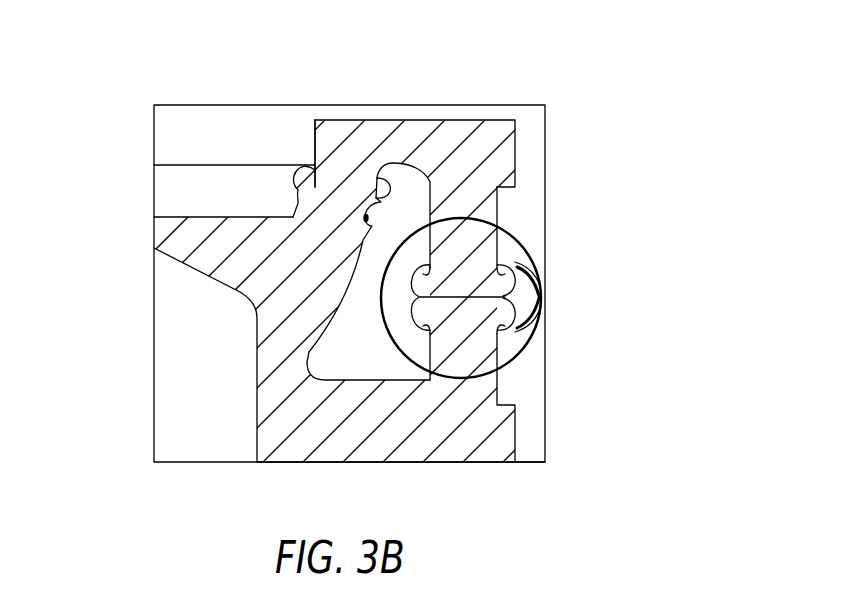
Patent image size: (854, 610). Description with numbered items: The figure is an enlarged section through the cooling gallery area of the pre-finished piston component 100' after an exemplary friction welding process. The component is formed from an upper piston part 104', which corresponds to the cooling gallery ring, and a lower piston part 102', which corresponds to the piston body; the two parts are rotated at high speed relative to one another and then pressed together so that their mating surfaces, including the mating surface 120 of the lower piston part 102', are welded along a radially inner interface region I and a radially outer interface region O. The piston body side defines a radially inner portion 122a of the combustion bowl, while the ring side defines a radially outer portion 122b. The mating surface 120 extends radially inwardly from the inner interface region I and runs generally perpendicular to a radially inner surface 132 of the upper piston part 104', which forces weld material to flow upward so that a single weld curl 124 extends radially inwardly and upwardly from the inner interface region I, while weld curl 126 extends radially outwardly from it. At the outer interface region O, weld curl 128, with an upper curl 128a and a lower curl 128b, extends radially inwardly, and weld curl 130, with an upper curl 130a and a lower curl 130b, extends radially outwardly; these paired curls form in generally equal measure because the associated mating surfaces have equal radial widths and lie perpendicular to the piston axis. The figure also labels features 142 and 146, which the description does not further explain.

The pre-finished piston component 100' is at (415, 238).
The lower piston part 102' is at (414, 107).
The upper piston part 104' is at (401, 482).
The mating surface 120 is at (243, 217).
The radially inner portion of the combustion bowl 122a is at (178, 215).
The radially outer portion of the combustion bowl 122b is at (313, 122).
The radially inner surface 132 is at (313, 122).
The weld curl 124 is at (297, 180).
The weld curl 126 is at (383, 193).
The weld curl 128 is at (382, 293).
The upper curl 128a is at (430, 222).
The lower curl 128b is at (431, 372).
The weld curl 130 is at (542, 291).
The upper curl 130a is at (513, 265).
The lower curl 130b is at (517, 323).
The groove wall 142 is at (498, 207).
The lower groove wall 146 is at (493, 355).
The radially inner interface region I is at (253, 302).
The radially outer interface region O is at (507, 362).